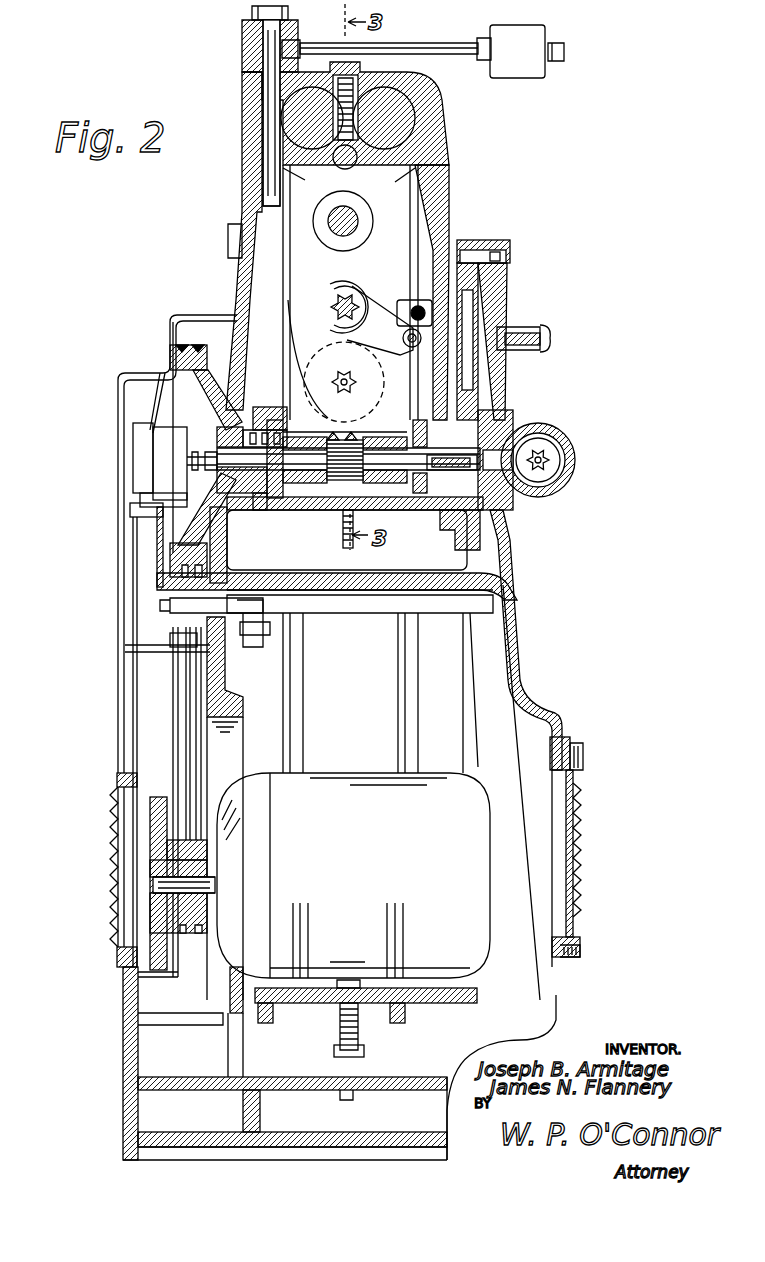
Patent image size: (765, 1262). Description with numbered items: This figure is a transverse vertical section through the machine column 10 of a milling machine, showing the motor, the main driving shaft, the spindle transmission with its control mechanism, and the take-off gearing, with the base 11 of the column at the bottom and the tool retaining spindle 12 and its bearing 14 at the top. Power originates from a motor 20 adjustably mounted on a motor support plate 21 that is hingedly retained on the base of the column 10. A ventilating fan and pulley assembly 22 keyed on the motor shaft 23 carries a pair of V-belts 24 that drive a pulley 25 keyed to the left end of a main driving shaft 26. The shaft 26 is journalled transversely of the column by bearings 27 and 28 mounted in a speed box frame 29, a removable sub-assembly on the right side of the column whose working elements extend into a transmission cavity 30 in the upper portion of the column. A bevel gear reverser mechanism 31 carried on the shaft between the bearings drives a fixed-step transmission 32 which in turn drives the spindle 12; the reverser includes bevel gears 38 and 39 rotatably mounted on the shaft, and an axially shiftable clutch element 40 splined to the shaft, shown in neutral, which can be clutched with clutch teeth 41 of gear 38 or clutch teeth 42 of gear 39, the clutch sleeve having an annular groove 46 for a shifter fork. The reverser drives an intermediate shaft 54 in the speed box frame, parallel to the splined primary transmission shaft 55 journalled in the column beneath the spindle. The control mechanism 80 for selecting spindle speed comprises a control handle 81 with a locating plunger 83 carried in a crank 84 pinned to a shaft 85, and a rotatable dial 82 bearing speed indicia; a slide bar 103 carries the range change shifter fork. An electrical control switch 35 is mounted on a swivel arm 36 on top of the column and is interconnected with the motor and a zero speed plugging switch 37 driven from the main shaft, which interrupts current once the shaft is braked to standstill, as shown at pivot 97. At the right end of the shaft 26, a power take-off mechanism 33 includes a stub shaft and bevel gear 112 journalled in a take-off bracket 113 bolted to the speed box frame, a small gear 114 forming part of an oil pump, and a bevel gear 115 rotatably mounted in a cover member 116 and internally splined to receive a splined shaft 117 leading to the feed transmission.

The column 10 is at (521, 656).
The base 11 is at (123, 1080).
The spindle 12 is at (338, 208).
The eccentric 14 is at (416, 108).
The motor 20 is at (329, 772).
The motor support plate 21 is at (440, 1004).
The ventilating fan and pulley assembly 22 is at (150, 900).
The motor shaft 23 is at (212, 887).
The V-belts 24 is at (190, 683).
The pulley 25 is at (177, 360).
The main driving shaft 26 is at (222, 482).
The bearing 27 is at (272, 410).
The bearing 28 is at (413, 424).
The speed box frame 29 is at (415, 511).
The transmission cavity 30 is at (257, 290).
The bevel gear reverser mechanism 31 is at (300, 511).
The fixed-step transmission 32 is at (411, 238).
The power take-off mechanism 33 is at (558, 405).
The electrical control switch 35 is at (550, 68).
The swivel arm 36 is at (453, 52).
The zero speed plugging switch 37 is at (145, 465).
The bevel gear 38 is at (298, 437).
The bevel gear 39 is at (386, 437).
The clutch element 40 is at (346, 500).
The clutch teeth 41 is at (331, 440).
The clutch teeth 42 is at (356, 460).
The annular groove 46 is at (346, 438).
The intermediate shaft 54 is at (345, 384).
The primary transmission shaft 55 is at (340, 302).
The spindle transmission control mechanism 80 is at (514, 244).
The control handle 81 is at (551, 338).
The dial 82 is at (486, 375).
The locating plunger 83 is at (529, 330).
The crank 84 is at (504, 281).
The shaft 85 is at (471, 241).
The pivot pin 97 is at (404, 337).
The slide bar 103 is at (418, 305).
The stub shaft and bevel gear 112 is at (515, 492).
The take-off bracket 113 is at (481, 513).
The small gear 114 is at (462, 478).
The bevel gear 115 is at (562, 446).
The cover member 116 is at (571, 430).
The splined shaft 117 is at (550, 460).